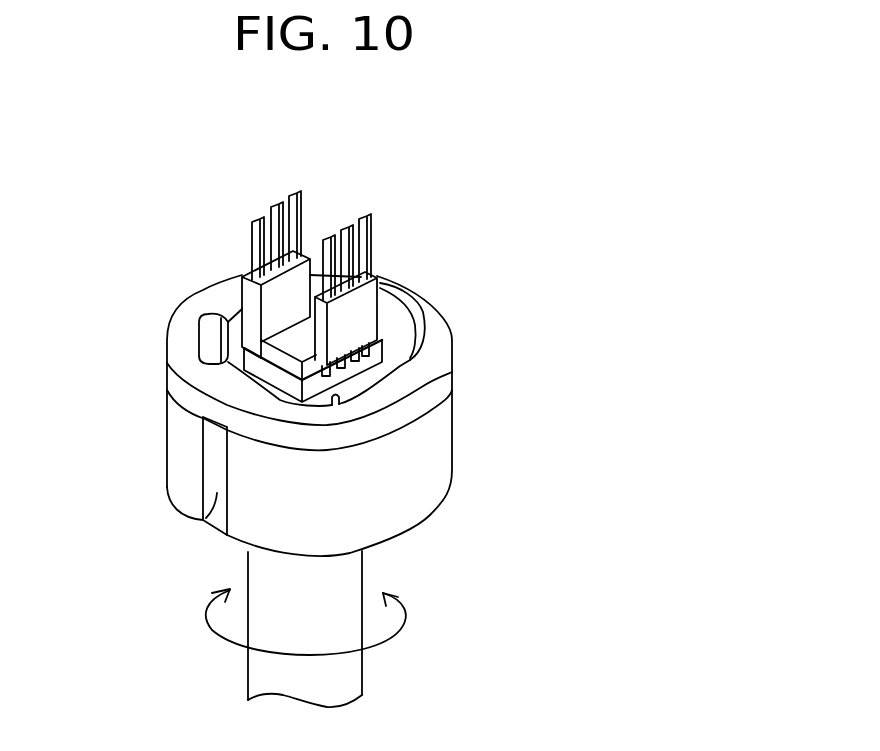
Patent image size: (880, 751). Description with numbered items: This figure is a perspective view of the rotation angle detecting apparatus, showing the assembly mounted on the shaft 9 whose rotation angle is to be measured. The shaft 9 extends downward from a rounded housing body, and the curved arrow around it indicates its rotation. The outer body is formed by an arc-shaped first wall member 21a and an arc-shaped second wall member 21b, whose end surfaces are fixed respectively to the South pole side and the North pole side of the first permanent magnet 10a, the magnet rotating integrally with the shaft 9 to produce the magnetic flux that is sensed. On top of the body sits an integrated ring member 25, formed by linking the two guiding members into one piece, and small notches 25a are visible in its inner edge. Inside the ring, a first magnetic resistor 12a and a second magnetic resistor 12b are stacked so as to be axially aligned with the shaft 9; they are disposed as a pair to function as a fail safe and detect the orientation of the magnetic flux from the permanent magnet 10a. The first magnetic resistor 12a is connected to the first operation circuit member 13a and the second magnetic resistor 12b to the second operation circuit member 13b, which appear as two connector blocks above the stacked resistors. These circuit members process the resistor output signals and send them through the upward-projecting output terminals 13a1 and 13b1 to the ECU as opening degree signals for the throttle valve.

The shaft 9 is at (332, 673).
The first permanent magnet 10a is at (217, 494).
The first magnetic resistor 12a is at (272, 351).
The second magnetic resistor 12b is at (270, 360).
The first operation circuit member 13a is at (357, 318).
The output terminal 13a1 is at (370, 237).
The second operation circuit member 13b is at (288, 291).
The output terminal 13b1 is at (277, 214).
The first wall member 21a is at (415, 468).
The second wall member 21b is at (183, 427).
The ring member 25 is at (435, 343).
The notch in frame ring 25a is at (197, 363).